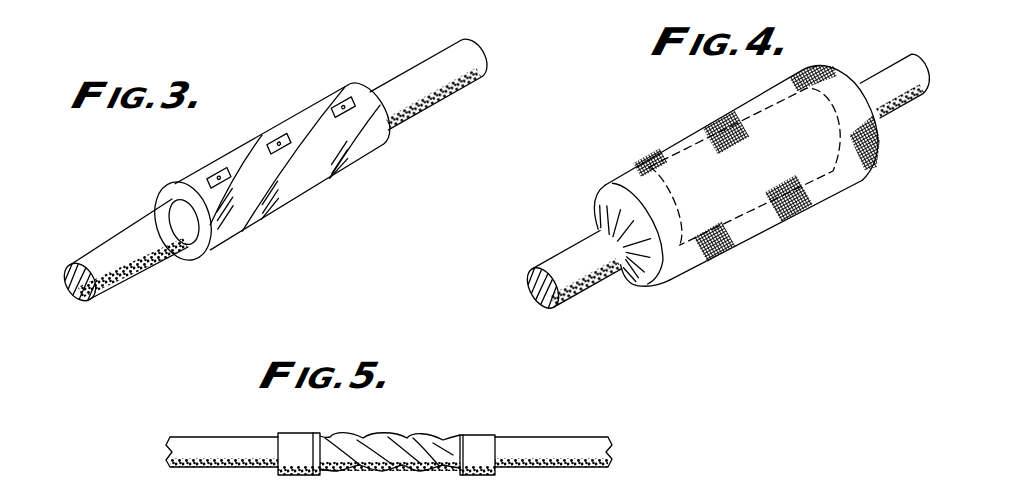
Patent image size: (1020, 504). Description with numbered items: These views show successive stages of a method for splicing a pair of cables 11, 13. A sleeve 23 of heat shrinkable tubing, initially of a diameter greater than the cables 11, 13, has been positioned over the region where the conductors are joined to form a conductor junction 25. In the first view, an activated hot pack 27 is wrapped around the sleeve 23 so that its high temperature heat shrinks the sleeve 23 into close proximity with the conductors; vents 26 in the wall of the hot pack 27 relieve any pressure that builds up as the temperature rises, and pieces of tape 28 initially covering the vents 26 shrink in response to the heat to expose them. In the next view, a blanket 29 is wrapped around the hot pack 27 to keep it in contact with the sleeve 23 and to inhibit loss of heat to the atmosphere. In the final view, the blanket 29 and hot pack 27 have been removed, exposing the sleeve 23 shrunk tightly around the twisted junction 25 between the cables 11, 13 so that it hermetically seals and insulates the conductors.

In FIG. 3, the cable 11 is at (121, 252).
In FIG. 4, the cable 11 is at (583, 255).
In FIG. 5, the cable 11 is at (228, 447).
In FIG. 3, the cable 13 is at (413, 78).
In FIG. 4, the cable 13 is at (888, 83).
In FIG. 5, the cable 13 is at (560, 450).
In FIG. 5, the sleeve 23 is at (477, 435).
In FIG. 5, the conductor junction 25 is at (396, 425).
In FIG. 3, the vents 26 is at (217, 176).
In FIG. 4, the hot pack 27 is at (687, 128).
In FIG. 3, the pieces of tape 28 is at (262, 135).
In FIG. 4, the blanket 29 is at (643, 157).